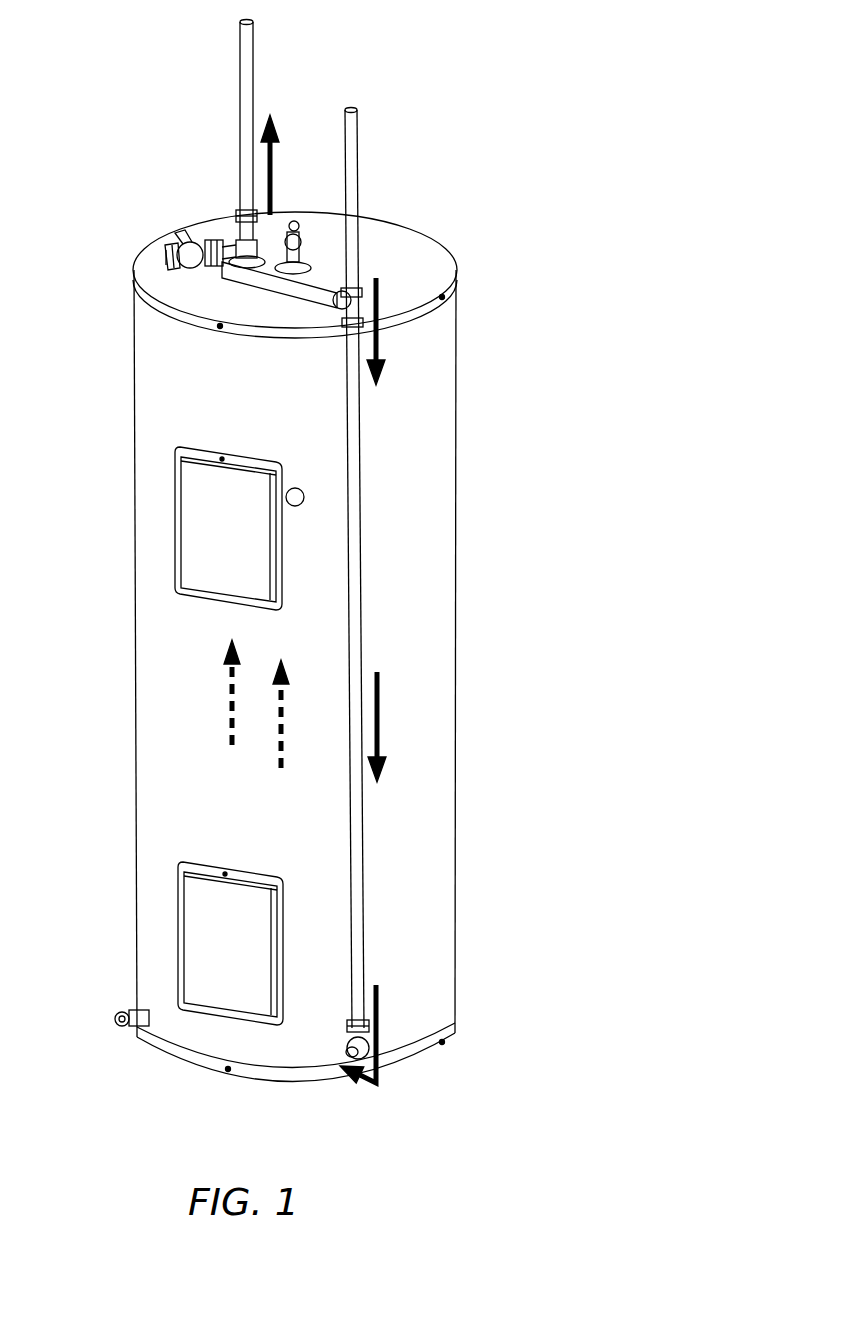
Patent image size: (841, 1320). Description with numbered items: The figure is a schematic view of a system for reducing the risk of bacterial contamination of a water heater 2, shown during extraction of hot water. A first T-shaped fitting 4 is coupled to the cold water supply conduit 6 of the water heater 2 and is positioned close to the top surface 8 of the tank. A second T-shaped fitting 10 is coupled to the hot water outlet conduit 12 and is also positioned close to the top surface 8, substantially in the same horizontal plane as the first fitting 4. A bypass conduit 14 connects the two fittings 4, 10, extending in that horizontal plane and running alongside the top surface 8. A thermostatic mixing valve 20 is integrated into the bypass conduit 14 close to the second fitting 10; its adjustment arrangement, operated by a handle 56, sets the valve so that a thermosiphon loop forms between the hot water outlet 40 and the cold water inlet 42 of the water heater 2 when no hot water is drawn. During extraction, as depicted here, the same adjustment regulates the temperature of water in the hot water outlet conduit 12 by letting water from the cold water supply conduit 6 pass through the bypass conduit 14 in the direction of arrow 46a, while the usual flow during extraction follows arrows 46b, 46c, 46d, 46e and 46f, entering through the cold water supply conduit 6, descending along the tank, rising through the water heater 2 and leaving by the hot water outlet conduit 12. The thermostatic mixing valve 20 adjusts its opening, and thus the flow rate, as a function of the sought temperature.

The water heater 2 is at (438, 530).
The first T-shaped fitting 4 is at (366, 290).
The cold water supply conduit 6 is at (357, 160).
The top surface 8 is at (438, 255).
The second T-shaped fitting 10 is at (237, 233).
The hot water outlet conduit 12 is at (245, 82).
The bypass conduit 14 is at (215, 287).
The thermostatic mixing valve 20 is at (174, 233).
The hot water outlet 40 is at (290, 228).
The cold water inlet 42 is at (345, 1050).
The handle 56 is at (166, 263).
The arrow 46a is at (252, 300).
The arrow 46b is at (380, 355).
The arrow 46c is at (380, 715).
The arrow 46d is at (375, 1045).
The arrow 46e is at (279, 716).
The arrow 46f is at (272, 167).